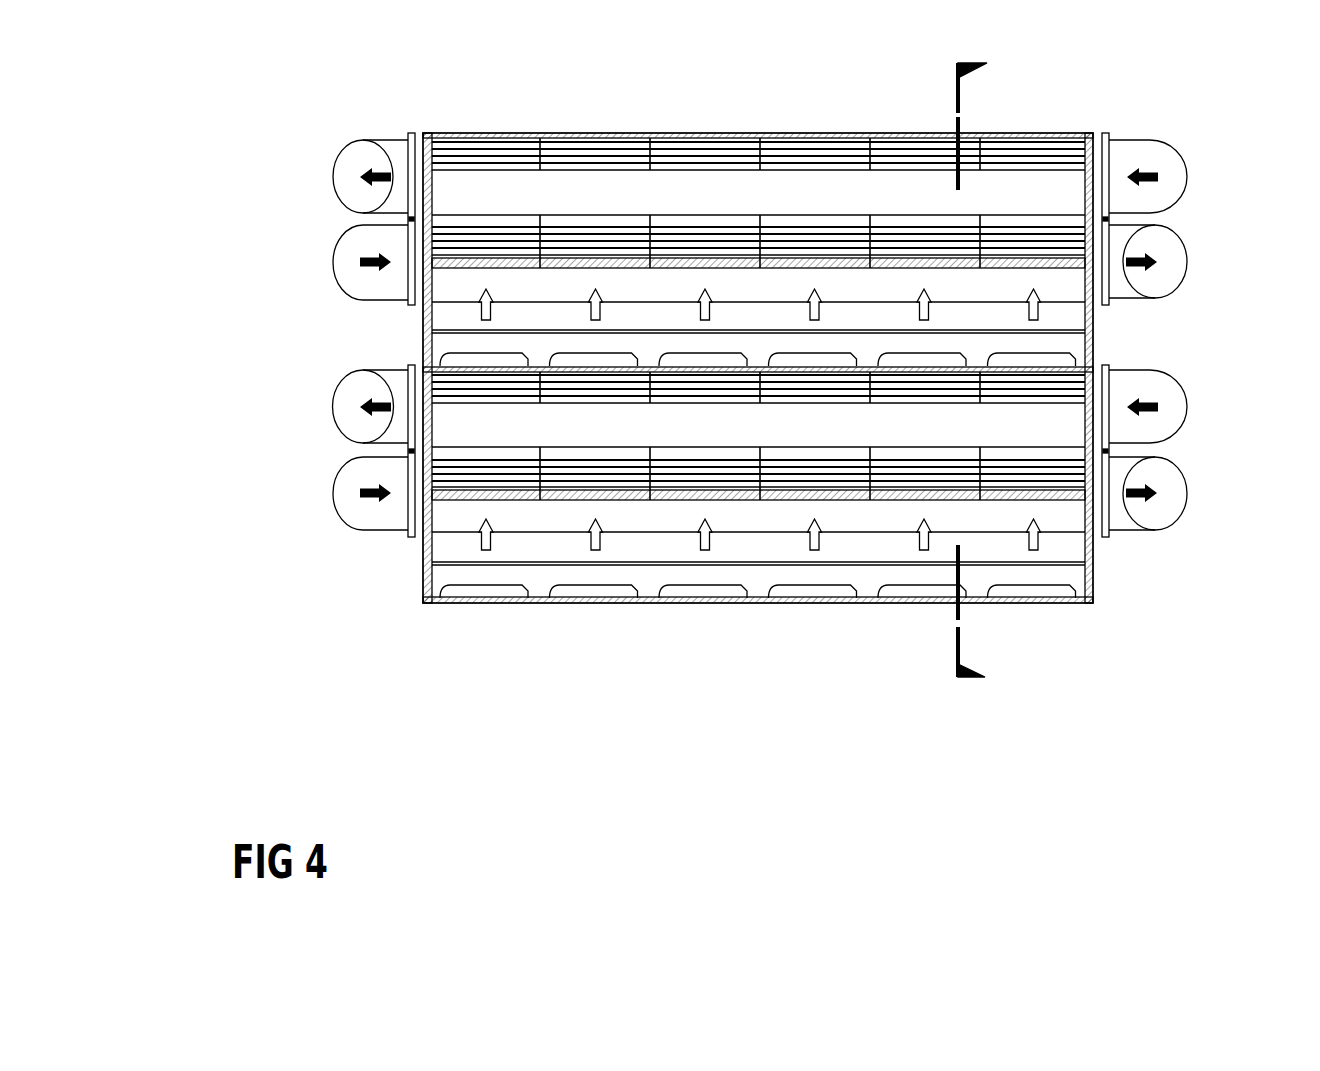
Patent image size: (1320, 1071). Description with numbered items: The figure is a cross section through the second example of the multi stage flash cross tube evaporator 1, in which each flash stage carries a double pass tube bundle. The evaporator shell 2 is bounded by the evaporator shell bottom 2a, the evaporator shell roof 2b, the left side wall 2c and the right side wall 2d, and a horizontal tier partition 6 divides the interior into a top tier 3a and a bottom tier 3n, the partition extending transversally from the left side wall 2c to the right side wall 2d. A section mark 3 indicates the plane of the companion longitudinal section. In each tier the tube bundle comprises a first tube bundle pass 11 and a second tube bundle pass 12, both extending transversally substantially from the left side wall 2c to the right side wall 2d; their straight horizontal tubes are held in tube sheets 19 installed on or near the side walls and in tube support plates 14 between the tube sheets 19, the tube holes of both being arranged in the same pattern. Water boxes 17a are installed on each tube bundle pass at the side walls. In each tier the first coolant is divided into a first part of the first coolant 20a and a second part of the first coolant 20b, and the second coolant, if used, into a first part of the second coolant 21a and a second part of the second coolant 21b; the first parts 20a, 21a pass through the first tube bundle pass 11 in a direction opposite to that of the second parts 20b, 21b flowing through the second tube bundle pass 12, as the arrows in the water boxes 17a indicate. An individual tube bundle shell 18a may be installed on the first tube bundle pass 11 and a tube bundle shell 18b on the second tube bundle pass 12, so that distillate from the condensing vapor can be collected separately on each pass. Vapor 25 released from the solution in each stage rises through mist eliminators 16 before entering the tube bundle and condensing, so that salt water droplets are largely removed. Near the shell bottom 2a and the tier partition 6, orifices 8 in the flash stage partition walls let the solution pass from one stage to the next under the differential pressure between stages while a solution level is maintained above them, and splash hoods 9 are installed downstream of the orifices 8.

The evaporator 1 is at (455, 133).
The evaporator shell 2 is at (1060, 133).
The evaporator shell bottom 2a is at (538, 603).
The evaporator shell roof 2b is at (523, 133).
The left side wall 2c is at (1095, 322).
The right side wall 2d is at (427, 353).
The section line of FIG. 3 is at (972, 373).
The top tier 3a is at (433, 133).
The bottom tier 3n is at (427, 578).
The horizontal tier partition 6 is at (1053, 363).
The orifices 8 is at (842, 587).
The splash hoods 9 is at (875, 565).
The first tube bundle pass 11 is at (738, 143).
The second tube bundle pass 12 is at (780, 237).
The tube support plates 14 is at (663, 133).
The mist eliminators 16 is at (783, 502).
The water boxes 17a is at (333, 240).
The tube bundle shell 18a is at (803, 193).
The tube bundle shell 18b is at (995, 293).
The tube sheets 19 is at (1085, 517).
The first part of the first coolant 20a is at (759, 288).
The second part of the first coolant 20b is at (756, 372).
The first part of the second coolant 21a is at (363, 403).
The second part of the second coolant 21b is at (363, 487).
The vapor 25 is at (595, 543).